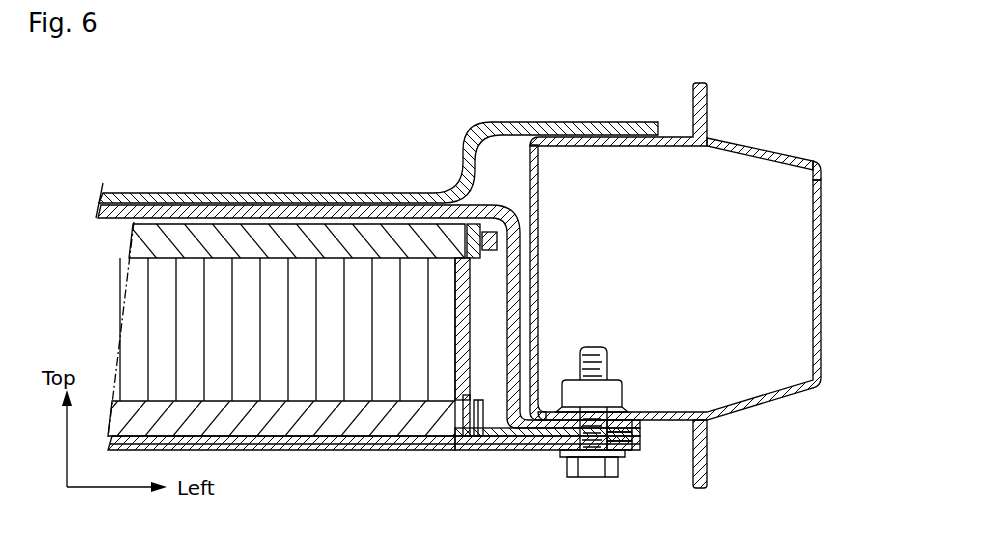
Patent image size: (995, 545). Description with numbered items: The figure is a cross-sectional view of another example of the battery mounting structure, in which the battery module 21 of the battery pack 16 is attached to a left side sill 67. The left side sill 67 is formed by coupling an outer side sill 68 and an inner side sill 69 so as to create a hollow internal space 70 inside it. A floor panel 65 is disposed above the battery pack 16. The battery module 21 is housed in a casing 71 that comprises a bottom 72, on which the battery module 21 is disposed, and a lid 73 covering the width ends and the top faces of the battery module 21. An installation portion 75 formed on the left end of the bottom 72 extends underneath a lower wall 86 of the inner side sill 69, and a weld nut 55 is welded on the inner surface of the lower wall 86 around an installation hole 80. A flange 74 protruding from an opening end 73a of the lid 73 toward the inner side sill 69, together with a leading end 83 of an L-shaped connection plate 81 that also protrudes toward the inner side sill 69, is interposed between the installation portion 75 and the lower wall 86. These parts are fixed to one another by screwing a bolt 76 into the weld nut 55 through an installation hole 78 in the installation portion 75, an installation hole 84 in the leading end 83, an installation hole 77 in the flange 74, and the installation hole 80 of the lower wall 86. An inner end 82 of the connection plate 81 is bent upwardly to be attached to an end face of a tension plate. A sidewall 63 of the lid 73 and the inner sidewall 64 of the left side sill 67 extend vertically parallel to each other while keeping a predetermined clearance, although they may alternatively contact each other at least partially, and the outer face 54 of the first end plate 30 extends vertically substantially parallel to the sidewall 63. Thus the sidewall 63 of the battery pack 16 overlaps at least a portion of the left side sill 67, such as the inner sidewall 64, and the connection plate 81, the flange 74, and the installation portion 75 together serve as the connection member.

The battery pack 16 is at (254, 476).
The battery module 21 is at (120, 285).
The first end plate 30 is at (515, 225).
The outer face 54 is at (477, 262).
The weld nut 55 is at (612, 388).
The sidewall 63 is at (522, 250).
The inner sidewall 64 is at (530, 205).
The floor panel 65 is at (385, 178).
The left side sill 67 is at (751, 126).
The outer side sill 68 is at (790, 158).
The inner side sill 69 is at (678, 140).
The hollow internal space 70 is at (775, 272).
The casing 71 is at (298, 465).
The bottom 72 is at (355, 452).
The lid 73 is at (208, 203).
The opening end 73a is at (502, 400).
The flange 74 is at (552, 424).
The installation portion 75 is at (527, 452).
The bolt 76 is at (596, 480).
The installation hole 77 is at (633, 427).
The installation hole 78 is at (623, 450).
The installation hole 80 is at (625, 412).
The connection plate 81 is at (496, 468).
The inner end 82 is at (459, 452).
The leading end 83 is at (633, 438).
The installation hole 84 is at (572, 460).
The lower wall 86 is at (695, 415).